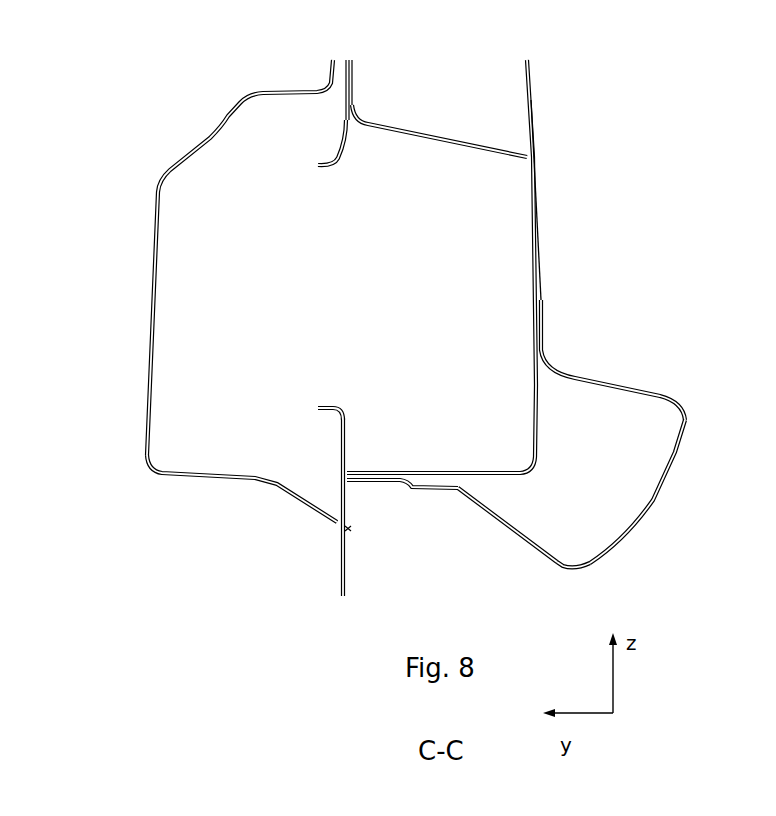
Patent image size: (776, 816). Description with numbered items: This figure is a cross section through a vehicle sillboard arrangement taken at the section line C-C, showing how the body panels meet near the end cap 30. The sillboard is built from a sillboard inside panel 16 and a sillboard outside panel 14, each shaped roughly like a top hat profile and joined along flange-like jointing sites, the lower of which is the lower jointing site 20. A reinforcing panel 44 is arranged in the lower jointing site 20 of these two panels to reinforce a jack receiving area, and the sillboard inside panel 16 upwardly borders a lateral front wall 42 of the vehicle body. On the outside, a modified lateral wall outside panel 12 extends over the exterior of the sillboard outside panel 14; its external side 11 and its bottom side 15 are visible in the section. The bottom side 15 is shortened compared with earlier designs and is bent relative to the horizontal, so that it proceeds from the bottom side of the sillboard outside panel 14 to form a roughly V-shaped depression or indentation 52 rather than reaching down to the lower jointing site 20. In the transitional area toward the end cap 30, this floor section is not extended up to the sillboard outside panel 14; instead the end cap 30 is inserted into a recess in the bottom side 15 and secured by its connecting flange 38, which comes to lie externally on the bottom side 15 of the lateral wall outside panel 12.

The external side 11 is at (657, 498).
The lateral wall outside panel 12 is at (636, 333).
The sillboard outside panel 14 is at (493, 472).
The bottom side 15 is at (523, 533).
The sillboard inside panel 16 is at (255, 480).
The lower jointing site 20 is at (337, 562).
The end cap 30 is at (400, 502).
The connecting flange 38 is at (452, 490).
The lateral front wall 42 is at (157, 190).
The reinforcing panel 44 is at (330, 404).
The indentation 52 is at (585, 544).